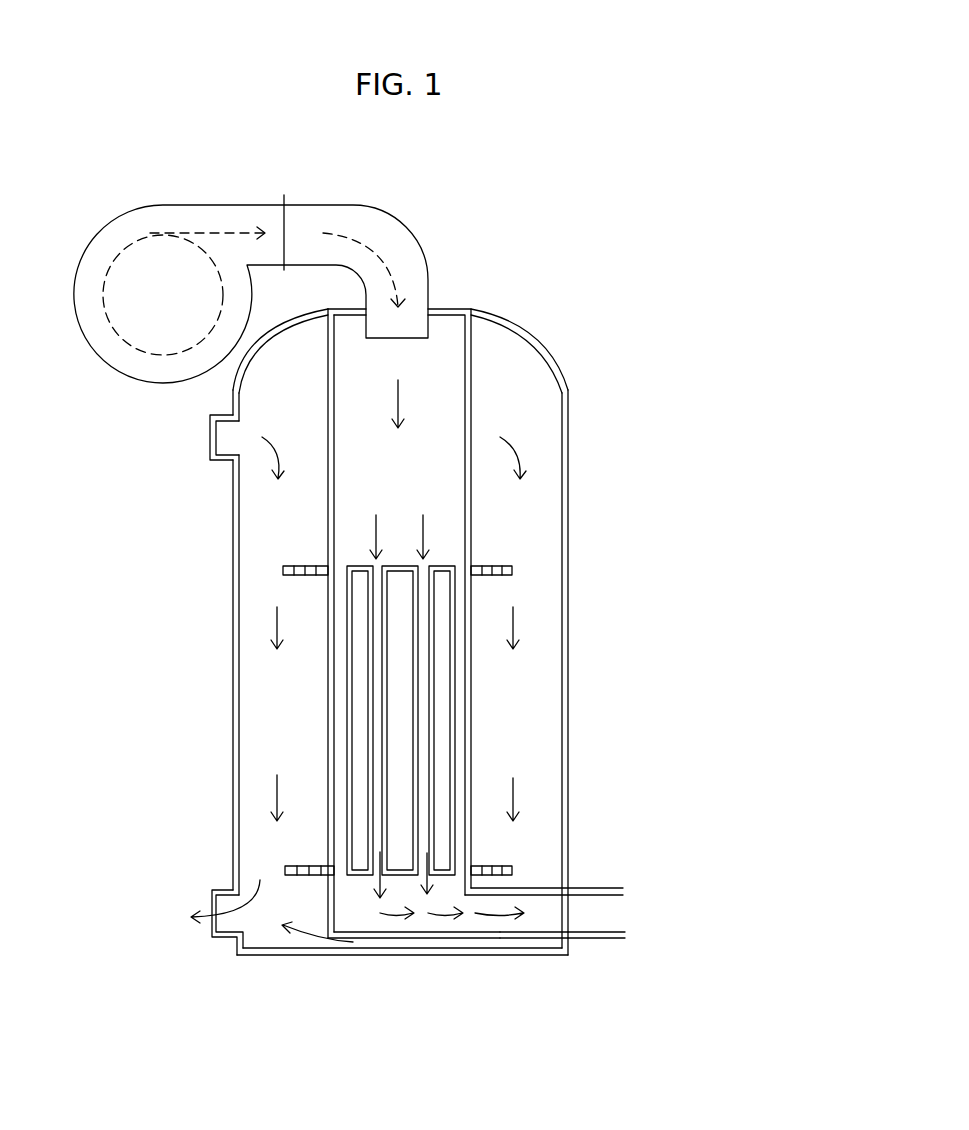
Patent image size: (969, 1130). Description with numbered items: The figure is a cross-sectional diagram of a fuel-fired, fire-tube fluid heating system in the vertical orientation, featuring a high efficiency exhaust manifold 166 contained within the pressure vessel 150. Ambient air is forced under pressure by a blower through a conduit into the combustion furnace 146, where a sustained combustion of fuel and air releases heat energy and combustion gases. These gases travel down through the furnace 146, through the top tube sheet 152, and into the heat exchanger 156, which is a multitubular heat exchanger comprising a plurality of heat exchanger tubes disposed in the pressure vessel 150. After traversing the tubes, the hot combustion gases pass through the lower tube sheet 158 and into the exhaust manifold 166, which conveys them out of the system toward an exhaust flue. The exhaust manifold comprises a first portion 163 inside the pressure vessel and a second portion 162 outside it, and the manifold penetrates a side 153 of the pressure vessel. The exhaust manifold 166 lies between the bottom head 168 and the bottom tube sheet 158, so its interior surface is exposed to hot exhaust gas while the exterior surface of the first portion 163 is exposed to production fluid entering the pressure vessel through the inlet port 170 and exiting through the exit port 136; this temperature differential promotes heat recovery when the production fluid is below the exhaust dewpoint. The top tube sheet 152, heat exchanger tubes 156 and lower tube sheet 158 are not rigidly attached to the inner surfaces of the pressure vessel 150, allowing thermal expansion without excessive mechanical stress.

The exit port 136 is at (208, 460).
The combustion furnace 146 is at (522, 678).
The pressure vessel 150 is at (401, 684).
The top tube sheet 152 is at (512, 567).
The side of the pressure vessel 153 is at (568, 780).
The heat exchanger 156 is at (470, 755).
The lower tube sheet 158 is at (512, 870).
The second portion of the exhaust manifold 162 is at (623, 932).
The first portion of the exhaust manifold 163 is at (533, 935).
The exhaust manifold 166 is at (430, 933).
The bottom head 168 is at (333, 960).
The inlet port 170 is at (210, 890).